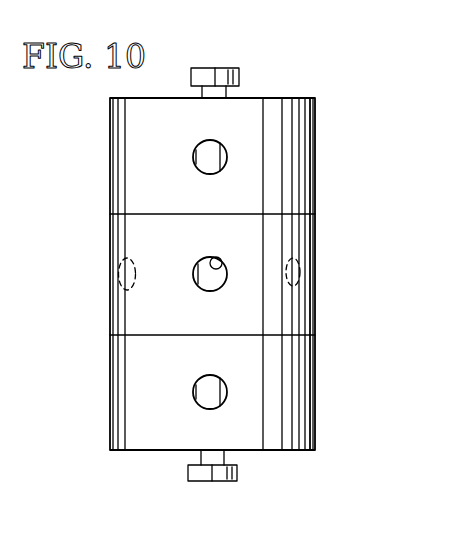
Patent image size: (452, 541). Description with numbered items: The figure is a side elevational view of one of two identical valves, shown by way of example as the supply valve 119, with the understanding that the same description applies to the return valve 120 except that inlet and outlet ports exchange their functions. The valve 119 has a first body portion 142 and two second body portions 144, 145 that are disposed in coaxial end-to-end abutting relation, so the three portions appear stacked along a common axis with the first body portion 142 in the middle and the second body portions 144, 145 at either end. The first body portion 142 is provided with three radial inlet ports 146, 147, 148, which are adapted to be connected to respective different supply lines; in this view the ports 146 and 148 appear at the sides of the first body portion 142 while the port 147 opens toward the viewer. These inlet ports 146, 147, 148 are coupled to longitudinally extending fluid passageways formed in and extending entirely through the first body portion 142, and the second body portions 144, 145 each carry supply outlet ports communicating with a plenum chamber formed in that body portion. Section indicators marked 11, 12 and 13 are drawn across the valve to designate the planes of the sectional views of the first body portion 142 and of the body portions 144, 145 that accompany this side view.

The supply valve 119 is at (290, 70).
The return valve 120 is at (212, 274).
The second body portion 144 is at (300, 135).
The first body portion 142 is at (300, 237).
The radial inlet port 147 is at (216, 257).
The second body portion 145 is at (300, 408).
The radial inlet port 146 is at (120, 262).
The radial inlet port 148 is at (305, 268).
The section line 13 (bolts) 13 is at (213, 55).
The section line 11 is at (97, 157).
The section line 12 is at (95, 275).